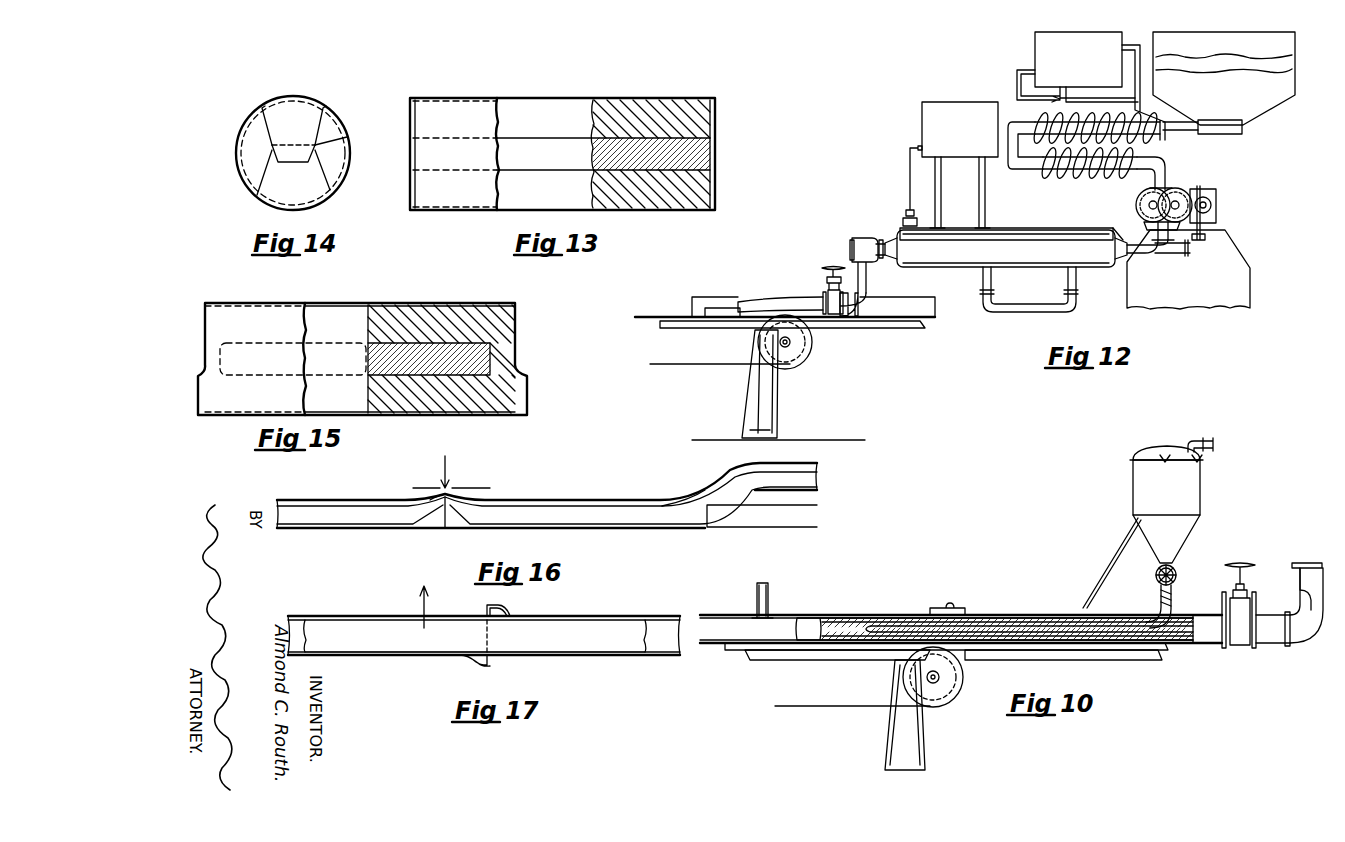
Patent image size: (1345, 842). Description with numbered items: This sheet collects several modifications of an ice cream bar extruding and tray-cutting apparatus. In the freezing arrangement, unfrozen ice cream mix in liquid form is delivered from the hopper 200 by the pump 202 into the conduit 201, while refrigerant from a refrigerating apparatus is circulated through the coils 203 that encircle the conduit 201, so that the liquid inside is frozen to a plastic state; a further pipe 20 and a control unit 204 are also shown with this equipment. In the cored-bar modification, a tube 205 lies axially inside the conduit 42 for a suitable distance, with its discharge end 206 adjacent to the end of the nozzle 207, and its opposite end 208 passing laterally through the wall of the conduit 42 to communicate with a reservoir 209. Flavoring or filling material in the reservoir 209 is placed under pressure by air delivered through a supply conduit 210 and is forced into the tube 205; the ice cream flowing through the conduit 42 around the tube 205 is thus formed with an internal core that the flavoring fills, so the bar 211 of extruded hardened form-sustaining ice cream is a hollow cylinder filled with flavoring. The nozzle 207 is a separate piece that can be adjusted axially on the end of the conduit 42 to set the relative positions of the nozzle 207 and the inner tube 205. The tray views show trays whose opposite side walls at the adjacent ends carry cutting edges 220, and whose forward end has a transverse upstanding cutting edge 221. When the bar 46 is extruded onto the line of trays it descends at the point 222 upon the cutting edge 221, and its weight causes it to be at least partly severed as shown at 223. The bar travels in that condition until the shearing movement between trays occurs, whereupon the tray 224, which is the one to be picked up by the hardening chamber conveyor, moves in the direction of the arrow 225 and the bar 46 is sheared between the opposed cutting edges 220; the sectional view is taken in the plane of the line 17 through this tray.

In FIG. 16, the section line 17 is at (448, 476).
In FIG. 10, the pipe 20 is at (1302, 579).
In FIG. 10, the conduit 42 is at (1022, 615).
In FIG. 16, the bar 46 is at (736, 478).
In FIG. 17, the bar 46 is at (550, 630).
In FIG. 12, the hopper 200 is at (1280, 80).
In FIG. 12, the conduit 201 is at (1183, 126).
In FIG. 12, the pump 202 is at (1176, 190).
In FIG. 12, the coils 203 is at (1060, 180).
In FIG. 12, the control box 204 is at (1048, 50).
In FIG. 10, the tube 205 is at (1024, 618).
In FIG. 10, the discharge end 206 is at (917, 618).
In FIG. 10, the nozzle 207 is at (880, 618).
In FIG. 10, the opposite end 208 is at (1160, 600).
In FIG. 10, the reservoir 209 is at (1178, 525).
In FIG. 10, the supply conduit 210 is at (1198, 440).
In FIG. 10, the bar 211 is at (836, 618).
In FIG. 17, the cutting edges 220 is at (488, 611).
In FIG. 16, the upstanding cutting edge 221 is at (450, 497).
In FIG. 16, the point 222 is at (708, 490).
In FIG. 16, the partly severed portion 223 is at (443, 494).
In FIG. 17, the tray 224 is at (388, 656).
In FIG. 17, the arrow 225 is at (418, 612).